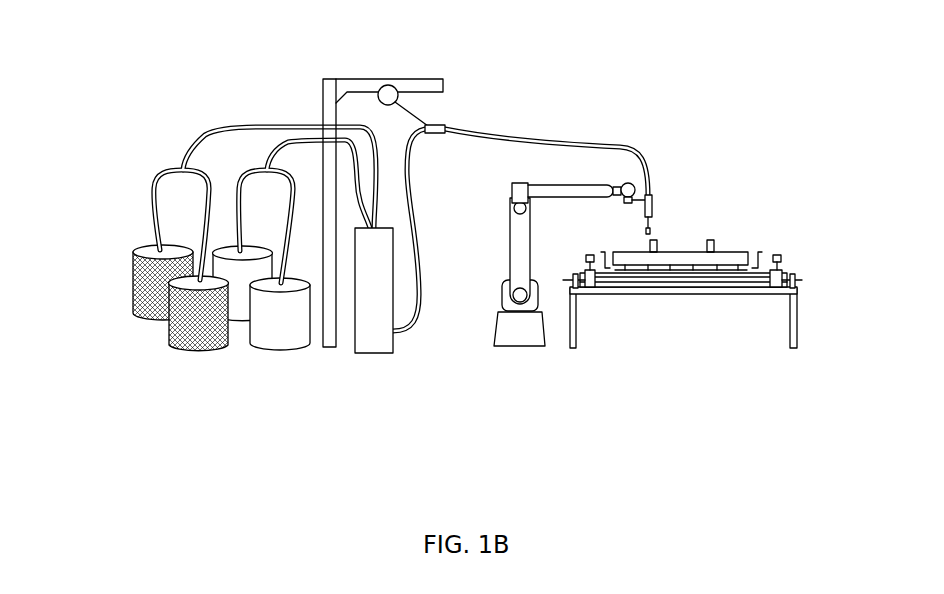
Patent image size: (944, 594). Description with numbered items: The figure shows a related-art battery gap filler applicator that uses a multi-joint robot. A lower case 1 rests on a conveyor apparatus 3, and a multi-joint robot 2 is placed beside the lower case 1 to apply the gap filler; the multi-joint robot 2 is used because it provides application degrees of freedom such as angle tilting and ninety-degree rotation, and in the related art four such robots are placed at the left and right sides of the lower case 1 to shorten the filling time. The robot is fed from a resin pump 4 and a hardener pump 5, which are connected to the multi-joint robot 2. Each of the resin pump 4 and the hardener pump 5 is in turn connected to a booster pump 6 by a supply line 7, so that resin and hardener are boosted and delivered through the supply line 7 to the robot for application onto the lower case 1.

The lower case 1 is at (687, 240).
The multi-joint robot 2 is at (504, 191).
The conveyor apparatus 3 is at (792, 266).
The resin pump 4 is at (277, 357).
The hardener pump 5 is at (195, 357).
The booster pump 6 is at (371, 345).
The supply line 7 is at (273, 128).